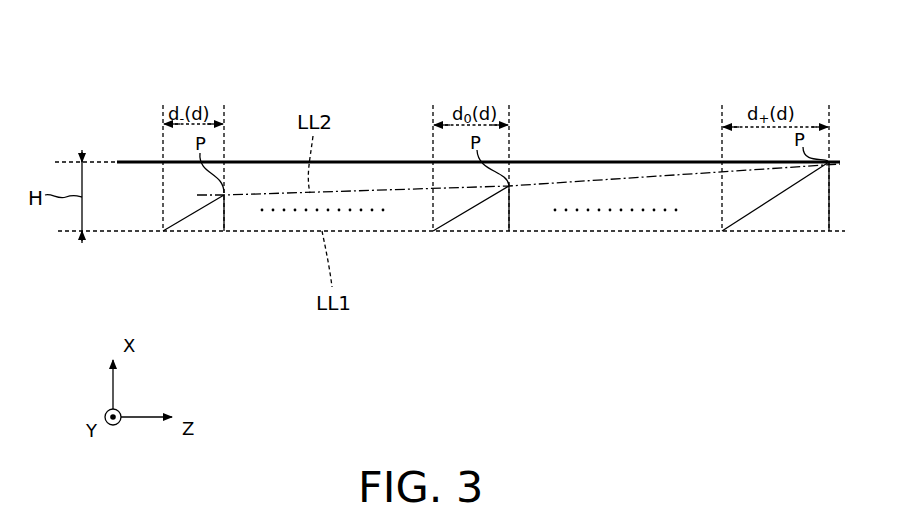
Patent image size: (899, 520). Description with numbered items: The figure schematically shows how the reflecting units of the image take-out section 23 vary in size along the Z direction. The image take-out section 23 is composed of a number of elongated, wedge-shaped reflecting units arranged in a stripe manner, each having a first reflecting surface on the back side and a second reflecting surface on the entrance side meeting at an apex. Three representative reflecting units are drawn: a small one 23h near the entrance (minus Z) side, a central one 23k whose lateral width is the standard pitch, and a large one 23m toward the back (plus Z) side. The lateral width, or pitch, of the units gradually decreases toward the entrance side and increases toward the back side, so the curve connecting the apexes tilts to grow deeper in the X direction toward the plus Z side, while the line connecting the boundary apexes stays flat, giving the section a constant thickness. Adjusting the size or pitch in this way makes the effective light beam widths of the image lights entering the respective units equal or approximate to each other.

The image take-out section 23 is at (527, 120).
The first (left end) prism 23h is at (200, 301).
The central prism 23k is at (481, 295).
The last (right end) prism 23m is at (781, 270).